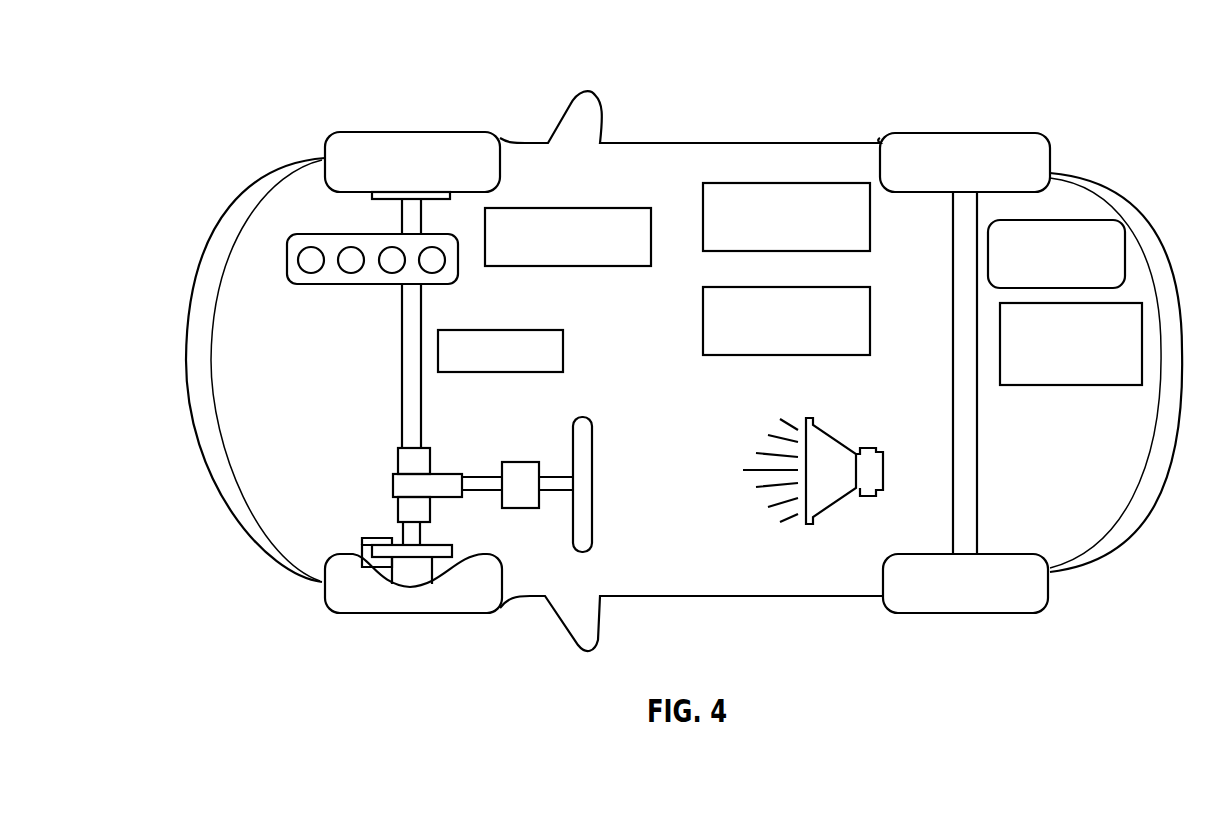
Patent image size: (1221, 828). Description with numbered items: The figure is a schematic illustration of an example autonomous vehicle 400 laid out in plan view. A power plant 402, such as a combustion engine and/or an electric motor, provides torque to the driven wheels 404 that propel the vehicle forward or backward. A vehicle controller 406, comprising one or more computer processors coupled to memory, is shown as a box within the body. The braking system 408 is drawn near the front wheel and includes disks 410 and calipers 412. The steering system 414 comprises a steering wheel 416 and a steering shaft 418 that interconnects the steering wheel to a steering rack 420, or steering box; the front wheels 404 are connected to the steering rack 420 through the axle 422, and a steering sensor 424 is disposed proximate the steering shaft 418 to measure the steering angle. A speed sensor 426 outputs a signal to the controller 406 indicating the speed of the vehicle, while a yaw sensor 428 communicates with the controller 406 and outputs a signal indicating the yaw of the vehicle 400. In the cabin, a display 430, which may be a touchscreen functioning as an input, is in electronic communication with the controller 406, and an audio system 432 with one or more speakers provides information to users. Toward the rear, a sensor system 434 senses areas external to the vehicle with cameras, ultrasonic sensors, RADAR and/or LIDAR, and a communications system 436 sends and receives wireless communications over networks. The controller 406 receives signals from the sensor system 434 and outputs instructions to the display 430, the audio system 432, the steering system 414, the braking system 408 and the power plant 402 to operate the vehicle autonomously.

The vehicle 400 is at (212, 60).
The power plant 402 is at (332, 284).
The driven wheels 404 is at (394, 142).
The vehicle controller 406 is at (586, 208).
The braking system 408 is at (359, 539).
The disks 410 is at (452, 549).
The calipers 412 is at (362, 552).
The steering system 414 is at (463, 450).
The steering wheel 416 is at (593, 480).
The steering shaft 418 is at (565, 492).
The steering rack 420 is at (520, 462).
The axle 422 is at (401, 225).
The steering sensor 424 is at (398, 465).
The speed sensor 426 is at (772, 183).
The yaw sensor 428 is at (772, 287).
The display 430 is at (507, 330).
The audio system 432 is at (830, 448).
The sensor system 434 is at (1000, 345).
The communications system 436 is at (988, 258).